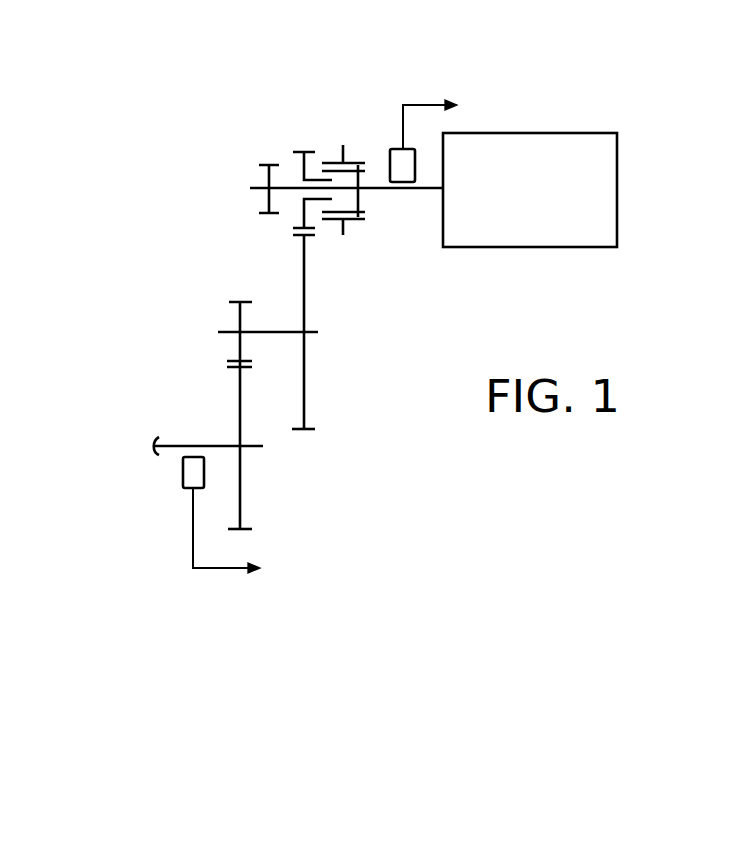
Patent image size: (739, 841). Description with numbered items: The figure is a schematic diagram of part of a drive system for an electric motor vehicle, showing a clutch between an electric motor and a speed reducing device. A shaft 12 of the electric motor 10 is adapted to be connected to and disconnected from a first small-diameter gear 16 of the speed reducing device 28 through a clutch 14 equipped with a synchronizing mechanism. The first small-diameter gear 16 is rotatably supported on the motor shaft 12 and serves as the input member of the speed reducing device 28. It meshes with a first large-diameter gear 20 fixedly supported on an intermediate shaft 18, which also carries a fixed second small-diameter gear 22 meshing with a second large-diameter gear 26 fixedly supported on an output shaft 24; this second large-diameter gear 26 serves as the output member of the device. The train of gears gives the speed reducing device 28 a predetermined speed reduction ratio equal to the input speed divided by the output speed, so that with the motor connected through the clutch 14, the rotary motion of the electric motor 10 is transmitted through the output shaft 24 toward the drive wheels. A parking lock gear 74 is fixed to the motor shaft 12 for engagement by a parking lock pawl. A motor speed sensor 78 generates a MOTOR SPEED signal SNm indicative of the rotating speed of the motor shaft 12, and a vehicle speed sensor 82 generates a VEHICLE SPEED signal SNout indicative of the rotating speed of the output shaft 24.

The electric motor 10 is at (590, 140).
The shaft 12 is at (407, 190).
The clutch 14 is at (335, 128).
The first small-diameter gear 16 is at (302, 151).
The intermediate shaft 18 is at (281, 330).
The first large-diameter gear 20 is at (310, 432).
The second small-diameter gear 22 is at (238, 300).
The output shaft 24 is at (200, 444).
The second large-diameter gear 26 is at (250, 531).
The speed reducing device 28 is at (354, 485).
The parking lock gear 74 is at (264, 165).
The motor speed sensor 78 is at (390, 160).
The vehicle speed sensor 82 is at (184, 472).